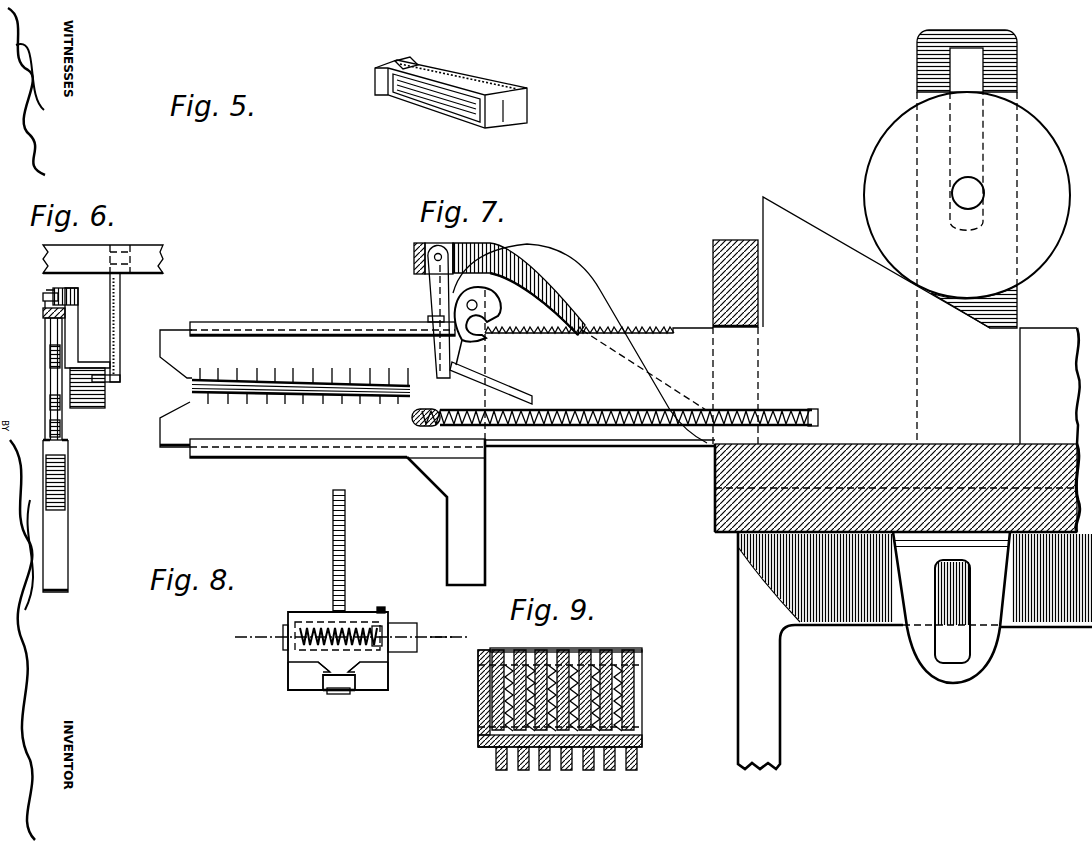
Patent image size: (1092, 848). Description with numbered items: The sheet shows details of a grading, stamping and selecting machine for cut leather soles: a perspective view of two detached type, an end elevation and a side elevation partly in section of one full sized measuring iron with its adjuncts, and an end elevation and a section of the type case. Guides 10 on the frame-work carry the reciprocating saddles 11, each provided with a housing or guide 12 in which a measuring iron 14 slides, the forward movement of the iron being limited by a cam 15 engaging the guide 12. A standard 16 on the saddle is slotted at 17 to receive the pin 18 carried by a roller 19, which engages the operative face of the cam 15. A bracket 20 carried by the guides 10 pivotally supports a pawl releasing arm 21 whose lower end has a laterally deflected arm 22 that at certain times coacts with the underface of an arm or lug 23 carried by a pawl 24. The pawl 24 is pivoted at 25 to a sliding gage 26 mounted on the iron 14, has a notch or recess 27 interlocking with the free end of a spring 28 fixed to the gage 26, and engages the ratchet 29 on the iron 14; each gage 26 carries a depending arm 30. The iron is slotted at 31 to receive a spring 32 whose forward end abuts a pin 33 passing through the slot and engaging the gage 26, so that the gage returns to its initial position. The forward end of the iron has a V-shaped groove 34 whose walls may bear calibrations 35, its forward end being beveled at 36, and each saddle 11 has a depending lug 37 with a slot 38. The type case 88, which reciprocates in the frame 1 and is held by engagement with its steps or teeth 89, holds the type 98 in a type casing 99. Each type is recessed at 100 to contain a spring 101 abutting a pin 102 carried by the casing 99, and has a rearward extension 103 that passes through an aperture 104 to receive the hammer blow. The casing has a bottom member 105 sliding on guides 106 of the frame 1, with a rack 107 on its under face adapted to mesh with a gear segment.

In FIG. 7, the frame 1 is at (770, 703).
In FIG. 7, the guides 10 is at (1060, 612).
In FIG. 7, the saddles 11 is at (715, 505).
In FIG. 7, the housing or guide 12 is at (718, 243).
In FIG. 6, the measuring iron 14 is at (50, 430).
In FIG. 7, the measuring iron 14 is at (1050, 386).
In FIG. 7, the cam 15 is at (876, 262).
In FIG. 7, the standard 16 is at (925, 62).
In FIG. 7, the slot 17 is at (966, 139).
In FIG. 7, the pin 18 is at (960, 193).
In FIG. 7, the roller 19 is at (893, 130).
In FIG. 6, the bracket 20 is at (145, 248).
In FIG. 7, the bracket 20 is at (563, 292).
In FIG. 6, the pawl releasing arm 21 is at (121, 310).
In FIG. 7, the pawl releasing arm 21 is at (414, 262).
In FIG. 6, the laterally deflected arm 22 is at (112, 374).
In FIG. 7, the laterally deflected arm 22 is at (437, 365).
In FIG. 6, the arm or lug 23 is at (88, 408).
In FIG. 7, the arm or lug 23 is at (500, 390).
In FIG. 6, the pawl 24 is at (75, 345).
In FIG. 7, the pawl 24 is at (500, 308).
In FIG. 6, the pivot 25 is at (78, 305).
In FIG. 7, the pivot 25 is at (475, 303).
In FIG. 6, the sliding gage 26 is at (45, 324).
In FIG. 7, the sliding gage 26 is at (290, 313).
In FIG. 6, the notch or recess 27 is at (50, 292).
In FIG. 7, the notch or recess 27 is at (460, 254).
In FIG. 6, the spring 28 is at (43, 312).
In FIG. 7, the spring 28 is at (430, 318).
In FIG. 7, the ratchet 29 is at (648, 327).
In FIG. 6, the depending arm 30 is at (60, 525).
In FIG. 7, the depending arm 30 is at (452, 437).
In FIG. 7, the slot 31 is at (785, 410).
In FIG. 7, the spring 32 is at (818, 418).
In FIG. 7, the pin 33 is at (412, 420).
In FIG. 6, the V-shaped groove 34 is at (50, 375).
In FIG. 7, the V-shaped groove 34 is at (296, 404).
In FIG. 7, the calibrations or indicating data 35 is at (208, 360).
In FIG. 6, the beveled forward end 36 is at (50, 405).
In FIG. 7, the beveled forward end 36 is at (168, 372).
In FIG. 7, the depending lug 37 is at (915, 632).
In FIG. 7, the slot 38 is at (942, 651).
In FIG. 8, the type case 88 is at (318, 553).
In FIG. 9, the type case 88 is at (468, 758).
In FIG. 8, the steps or teeth 89 is at (333, 535).
In FIG. 5, the type 98 is at (490, 92).
In FIG. 8, the type 98 is at (288, 625).
In FIG. 9, the type 98 is at (580, 650).
In FIG. 8, the type casing 99 is at (300, 612).
In FIG. 9, the type casing 99 is at (478, 672).
In FIG. 5, the recess or slot 100 is at (450, 80).
In FIG. 9, the recess or slot 100 is at (640, 650).
In FIG. 8, the spring 101 is at (385, 628).
In FIG. 9, the spring 101 is at (492, 692).
In FIG. 8, the pin 102 is at (382, 606).
In FIG. 9, the pin 102 is at (520, 655).
In FIG. 5, the rearward extension 103 is at (397, 60).
In FIG. 8, the rearward extension 103 is at (405, 632).
In FIG. 9, the rearward extension 103 is at (575, 770).
In FIG. 9, the aperture 104 is at (478, 740).
In FIG. 8, the bottom member 105 is at (320, 665).
In FIG. 8, the guides 106 is at (290, 685).
In FIG. 8, the rack 107 is at (335, 695).